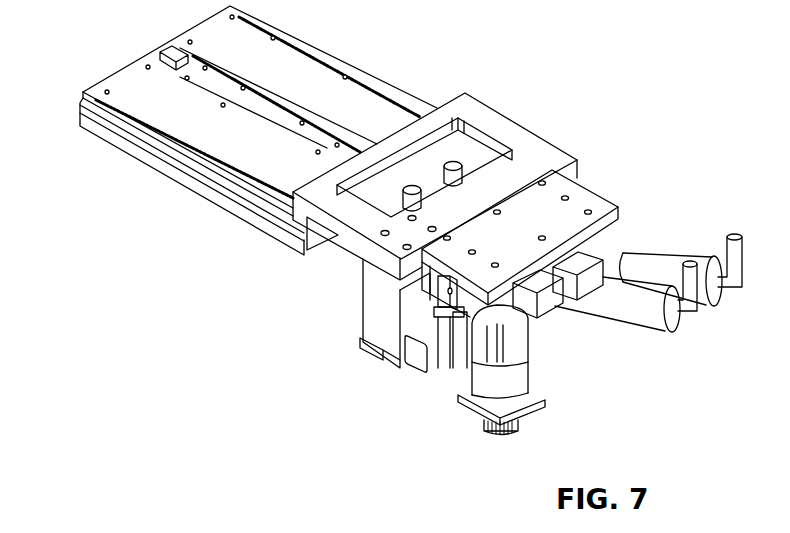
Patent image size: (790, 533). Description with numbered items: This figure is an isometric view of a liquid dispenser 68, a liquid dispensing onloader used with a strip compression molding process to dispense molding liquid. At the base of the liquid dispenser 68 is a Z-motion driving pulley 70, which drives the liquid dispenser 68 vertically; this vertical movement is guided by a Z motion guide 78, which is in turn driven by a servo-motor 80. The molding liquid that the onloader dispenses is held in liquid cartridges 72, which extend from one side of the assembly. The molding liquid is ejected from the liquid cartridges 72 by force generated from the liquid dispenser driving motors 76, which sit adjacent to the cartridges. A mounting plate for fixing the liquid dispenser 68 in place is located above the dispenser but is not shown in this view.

The liquid dispenser 68 is at (411, 228).
The Z-motion driving pulley 70 is at (442, 373).
The liquid cartridges 72 is at (665, 262).
The liquid dispenser driving motors 76 is at (592, 286).
The Z motion guide 78 is at (433, 333).
The servo-motor 80 is at (499, 338).